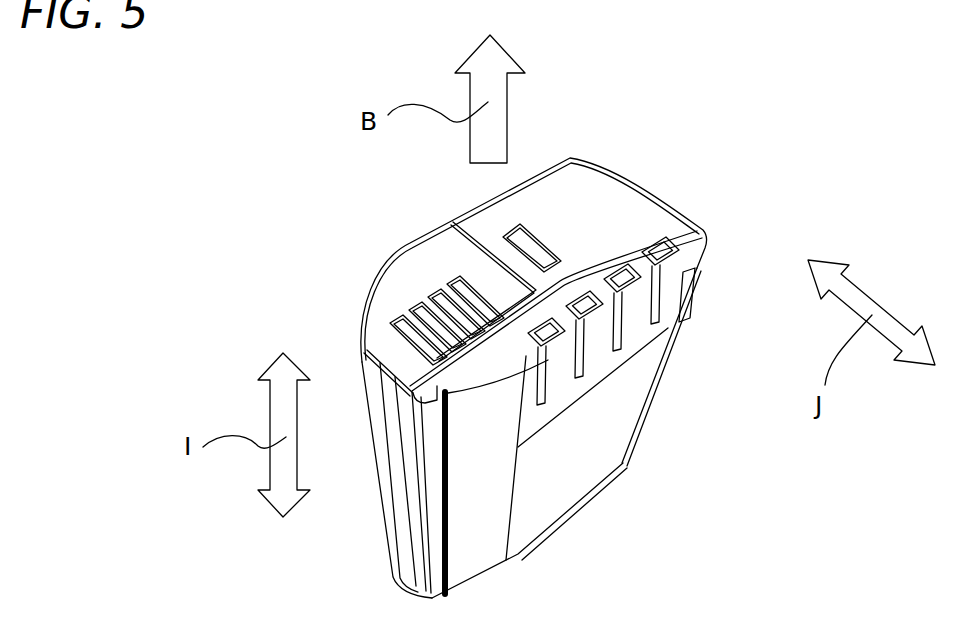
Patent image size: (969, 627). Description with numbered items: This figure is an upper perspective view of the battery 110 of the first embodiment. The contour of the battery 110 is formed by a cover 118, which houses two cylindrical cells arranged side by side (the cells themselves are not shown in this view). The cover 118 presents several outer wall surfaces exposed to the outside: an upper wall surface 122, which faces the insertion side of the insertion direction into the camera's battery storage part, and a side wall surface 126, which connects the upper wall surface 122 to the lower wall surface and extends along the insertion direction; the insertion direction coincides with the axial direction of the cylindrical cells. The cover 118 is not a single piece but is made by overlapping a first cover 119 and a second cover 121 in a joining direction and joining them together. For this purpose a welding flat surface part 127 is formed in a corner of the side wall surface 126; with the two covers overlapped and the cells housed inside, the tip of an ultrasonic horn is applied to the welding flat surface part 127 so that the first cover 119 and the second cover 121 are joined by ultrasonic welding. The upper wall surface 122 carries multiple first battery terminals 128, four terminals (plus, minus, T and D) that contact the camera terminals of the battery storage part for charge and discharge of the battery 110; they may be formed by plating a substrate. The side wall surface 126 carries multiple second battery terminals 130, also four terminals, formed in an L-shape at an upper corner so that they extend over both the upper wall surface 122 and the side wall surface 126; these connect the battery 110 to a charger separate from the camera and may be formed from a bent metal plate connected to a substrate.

The battery 110 is at (743, 181).
The cover 118 is at (544, 339).
The first cover 119 is at (343, 307).
The second cover 121 is at (665, 455).
The upper wall surface 122 is at (583, 197).
The side wall surface 126 is at (567, 477).
The welding flat surface part 127 is at (437, 493).
The first battery terminals 128 is at (400, 330).
The second battery terminals 130 is at (543, 372).